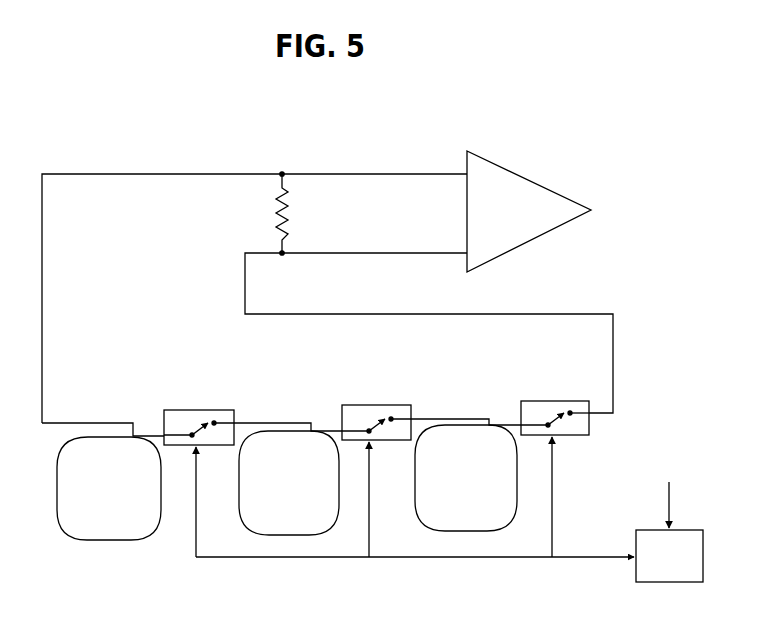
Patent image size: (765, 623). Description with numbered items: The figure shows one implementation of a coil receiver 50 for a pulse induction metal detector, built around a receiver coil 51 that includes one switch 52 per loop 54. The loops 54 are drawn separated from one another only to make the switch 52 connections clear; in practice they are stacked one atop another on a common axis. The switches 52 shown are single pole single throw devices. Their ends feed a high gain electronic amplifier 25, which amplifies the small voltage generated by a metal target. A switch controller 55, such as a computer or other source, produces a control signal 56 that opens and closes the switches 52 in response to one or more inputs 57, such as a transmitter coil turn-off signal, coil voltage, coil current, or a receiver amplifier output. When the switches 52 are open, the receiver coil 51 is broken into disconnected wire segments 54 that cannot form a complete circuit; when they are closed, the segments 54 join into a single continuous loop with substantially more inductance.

The coil receiver 50 is at (140, 151).
The high gain electronic amplifier 25 is at (524, 220).
The receiver coil 51 is at (160, 395).
The switch 52 is at (210, 402).
The loop 54 is at (83, 538).
The switch controller 55 is at (669, 556).
The control signal 56 is at (510, 558).
The inputs 57 is at (670, 494).